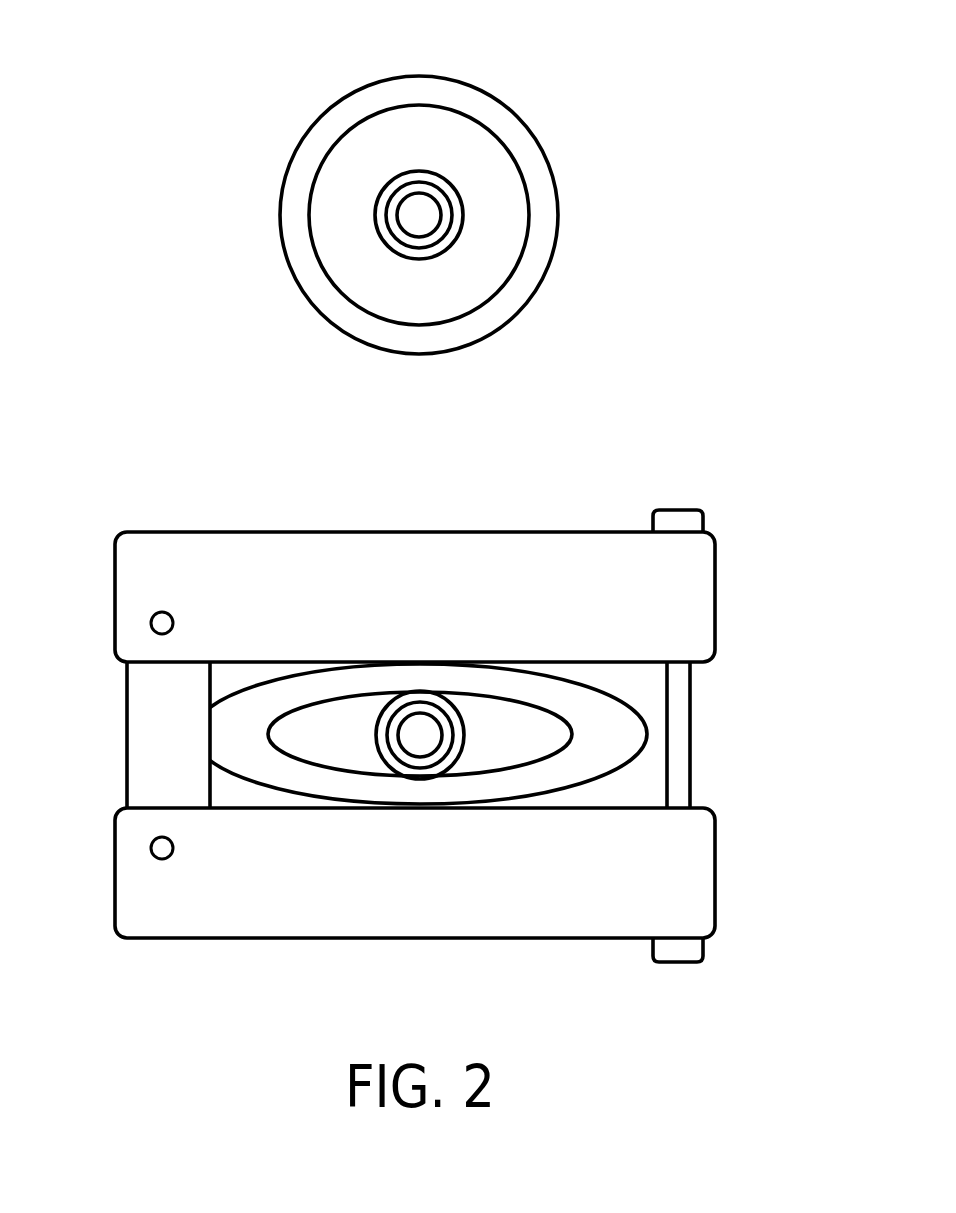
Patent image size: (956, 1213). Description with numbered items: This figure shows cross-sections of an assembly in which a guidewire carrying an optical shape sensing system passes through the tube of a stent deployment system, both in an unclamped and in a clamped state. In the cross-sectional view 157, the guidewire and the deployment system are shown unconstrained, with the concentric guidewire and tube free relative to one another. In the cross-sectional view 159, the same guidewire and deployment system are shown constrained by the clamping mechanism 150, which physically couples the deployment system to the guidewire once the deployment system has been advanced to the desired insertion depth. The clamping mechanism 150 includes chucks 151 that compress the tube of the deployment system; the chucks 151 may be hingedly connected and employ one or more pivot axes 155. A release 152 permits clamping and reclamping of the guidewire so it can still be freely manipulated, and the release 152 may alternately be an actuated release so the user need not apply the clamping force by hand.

The clamping mechanism 150 is at (412, 738).
The chucks 151 is at (189, 543).
The release 152 is at (690, 737).
The pivot axes 155 is at (150, 623).
The cross-sectional view 157 is at (422, 216).
The cross-sectional view 159 is at (438, 733).